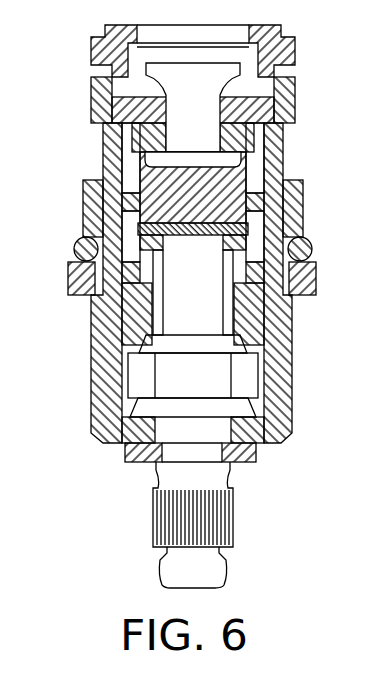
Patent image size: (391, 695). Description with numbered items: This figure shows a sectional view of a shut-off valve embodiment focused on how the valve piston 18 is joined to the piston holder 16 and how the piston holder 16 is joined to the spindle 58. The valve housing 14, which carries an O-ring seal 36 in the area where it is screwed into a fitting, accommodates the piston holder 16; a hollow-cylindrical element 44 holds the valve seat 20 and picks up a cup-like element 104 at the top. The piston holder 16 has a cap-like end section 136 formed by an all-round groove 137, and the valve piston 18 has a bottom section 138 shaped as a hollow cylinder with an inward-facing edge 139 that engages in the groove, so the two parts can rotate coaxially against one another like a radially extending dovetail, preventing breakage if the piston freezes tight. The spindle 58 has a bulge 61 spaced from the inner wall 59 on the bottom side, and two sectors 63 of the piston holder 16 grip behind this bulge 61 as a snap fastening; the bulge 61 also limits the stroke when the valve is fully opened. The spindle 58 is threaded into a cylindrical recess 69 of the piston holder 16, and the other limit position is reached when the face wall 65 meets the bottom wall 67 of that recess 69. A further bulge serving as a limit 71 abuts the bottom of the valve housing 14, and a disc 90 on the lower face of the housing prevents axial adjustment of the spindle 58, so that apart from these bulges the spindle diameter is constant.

The valve housing 14 is at (258, 443).
The piston holder 16 is at (304, 236).
The valve piston 18 is at (223, 70).
The valve seat 20 is at (262, 108).
The O-ring seal 36 is at (74, 252).
The hollow-cylindrical element 44 is at (278, 150).
The spindle 58 is at (257, 434).
The inner wall 59 is at (266, 400).
The bulge 61 is at (258, 336).
The sectors 63 is at (247, 358).
The face wall 65 is at (125, 185).
The bottom wall 67 is at (258, 296).
The recess 69 is at (120, 168).
The bulge serving as a limit 71 is at (150, 402).
The disc 90 is at (127, 455).
The cup-like element 104 is at (100, 85).
The cap-like end section 136 is at (292, 186).
The all-round groove 137 is at (93, 298).
The bottom section 138 is at (300, 275).
The edge 139 is at (100, 225).